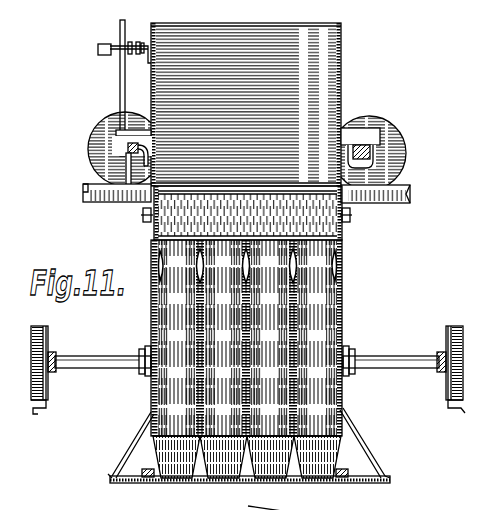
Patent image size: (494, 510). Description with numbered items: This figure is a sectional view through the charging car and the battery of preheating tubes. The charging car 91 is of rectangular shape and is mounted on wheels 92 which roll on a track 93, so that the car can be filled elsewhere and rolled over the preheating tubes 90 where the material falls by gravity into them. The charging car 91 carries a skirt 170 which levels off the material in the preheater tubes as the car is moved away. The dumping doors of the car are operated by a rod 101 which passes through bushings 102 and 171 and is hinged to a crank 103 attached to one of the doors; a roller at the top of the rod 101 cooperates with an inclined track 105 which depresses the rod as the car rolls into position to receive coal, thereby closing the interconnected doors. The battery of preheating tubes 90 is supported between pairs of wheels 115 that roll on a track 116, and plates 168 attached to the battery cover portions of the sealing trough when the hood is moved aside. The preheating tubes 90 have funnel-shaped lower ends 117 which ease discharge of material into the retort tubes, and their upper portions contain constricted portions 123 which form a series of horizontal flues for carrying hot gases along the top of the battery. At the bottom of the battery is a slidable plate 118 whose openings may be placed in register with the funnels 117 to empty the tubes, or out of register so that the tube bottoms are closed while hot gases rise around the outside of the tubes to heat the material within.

The preheating tubes 90 is at (318, 293).
The charging car 91 is at (337, 78).
The wheels 92 is at (388, 132).
The track 93 is at (395, 178).
The rod 101 is at (112, 79).
The bushing 102 is at (97, 40).
The crank 103 is at (110, 161).
The inclined track 105 is at (357, 504).
The wheels 115 is at (448, 320).
The track 116 is at (30, 400).
The funnel-shaped lower ends 117 is at (318, 440).
The slidable plate 118 is at (306, 476).
The constricted portions 123 is at (330, 248).
The plates 168 is at (372, 477).
The skirt 170 is at (145, 224).
The bushing 171 is at (108, 125).